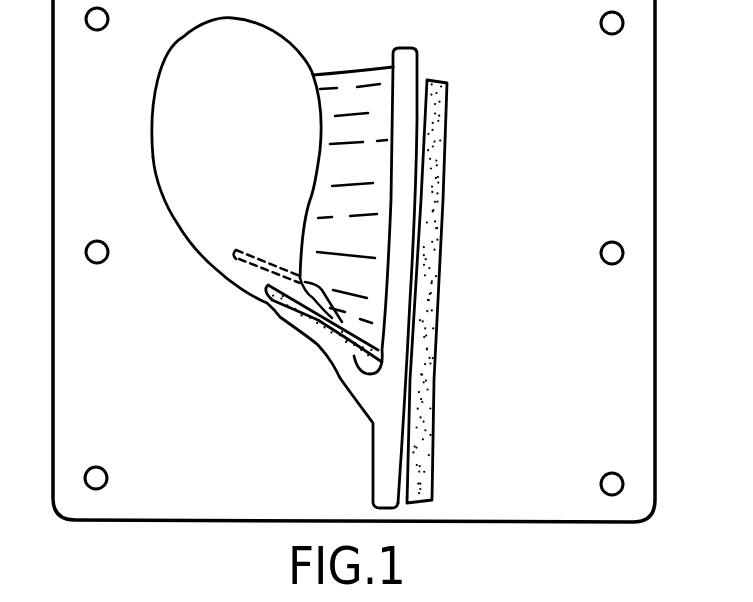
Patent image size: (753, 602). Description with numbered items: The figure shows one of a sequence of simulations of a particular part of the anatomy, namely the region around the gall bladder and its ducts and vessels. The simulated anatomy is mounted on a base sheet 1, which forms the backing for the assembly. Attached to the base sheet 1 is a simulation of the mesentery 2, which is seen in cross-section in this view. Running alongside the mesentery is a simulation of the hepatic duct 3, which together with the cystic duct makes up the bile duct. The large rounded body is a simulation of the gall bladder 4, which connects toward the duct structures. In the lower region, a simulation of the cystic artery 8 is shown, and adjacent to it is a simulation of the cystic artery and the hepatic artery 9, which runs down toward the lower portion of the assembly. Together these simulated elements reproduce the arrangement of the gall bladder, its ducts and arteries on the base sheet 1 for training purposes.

The base sheet 1 is at (637, 198).
The simulation of the mesentery 2 is at (377, 197).
The simulation of the hepatic duct 3 is at (408, 68).
The simulation of the gall bladder 4 is at (173, 159).
The simulation of the cystic artery 8 is at (323, 343).
The simulation of the cystic artery and the hepatic artery 9 is at (348, 372).